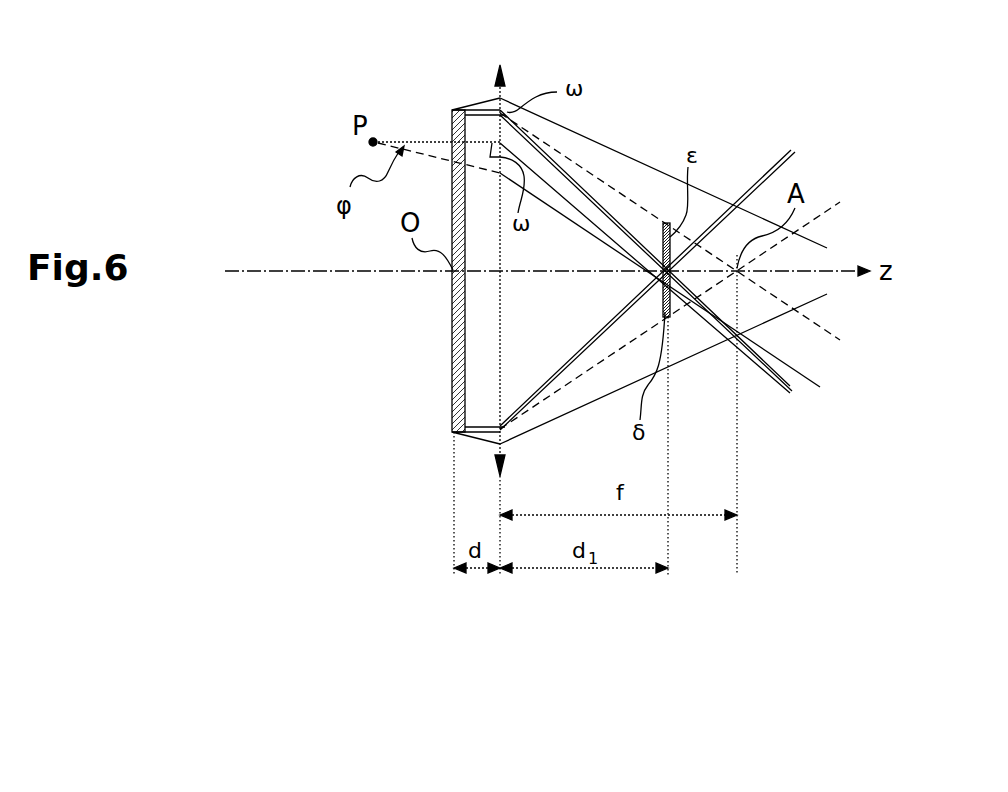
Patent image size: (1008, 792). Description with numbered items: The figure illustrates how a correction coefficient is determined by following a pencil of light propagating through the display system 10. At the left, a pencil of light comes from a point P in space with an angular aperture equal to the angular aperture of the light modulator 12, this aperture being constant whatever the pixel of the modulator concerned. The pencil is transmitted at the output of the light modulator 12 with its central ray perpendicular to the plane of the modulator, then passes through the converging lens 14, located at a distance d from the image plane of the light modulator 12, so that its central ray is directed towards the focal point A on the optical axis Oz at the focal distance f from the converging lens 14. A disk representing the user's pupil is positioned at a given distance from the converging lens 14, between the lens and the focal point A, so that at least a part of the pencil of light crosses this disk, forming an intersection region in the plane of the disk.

The display system 10 is at (423, 336).
The light modulator 12 is at (452, 315).
The converging lens 14 is at (503, 90).